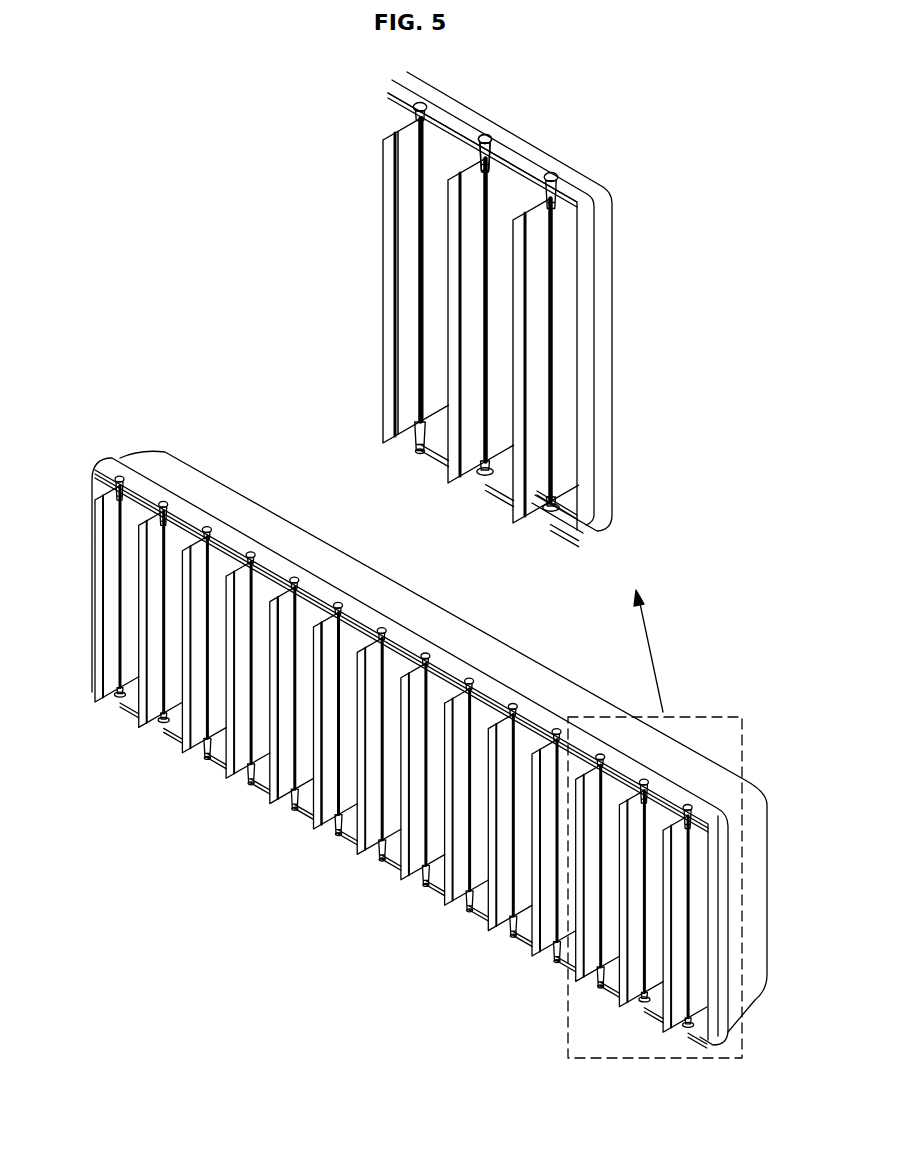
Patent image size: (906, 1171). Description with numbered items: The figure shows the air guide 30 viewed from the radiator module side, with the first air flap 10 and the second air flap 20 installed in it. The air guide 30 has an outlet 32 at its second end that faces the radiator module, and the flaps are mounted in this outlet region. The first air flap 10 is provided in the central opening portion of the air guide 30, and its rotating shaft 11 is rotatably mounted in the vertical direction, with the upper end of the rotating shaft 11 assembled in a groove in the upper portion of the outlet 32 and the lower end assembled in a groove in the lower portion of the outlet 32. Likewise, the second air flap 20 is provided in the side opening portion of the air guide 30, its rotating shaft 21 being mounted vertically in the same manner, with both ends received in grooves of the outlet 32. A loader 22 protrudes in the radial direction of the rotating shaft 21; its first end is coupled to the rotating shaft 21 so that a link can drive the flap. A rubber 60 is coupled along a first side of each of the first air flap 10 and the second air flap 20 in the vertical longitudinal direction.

The first air flap 10 is at (418, 852).
The rotating shaft 11 is at (422, 231).
The second air flap 20 is at (157, 708).
The rotating shaft 21 is at (488, 182).
The loader 22 is at (493, 143).
The air guide 30 is at (452, 622).
The outlet 32 is at (572, 312).
The rubber 60 is at (312, 818).